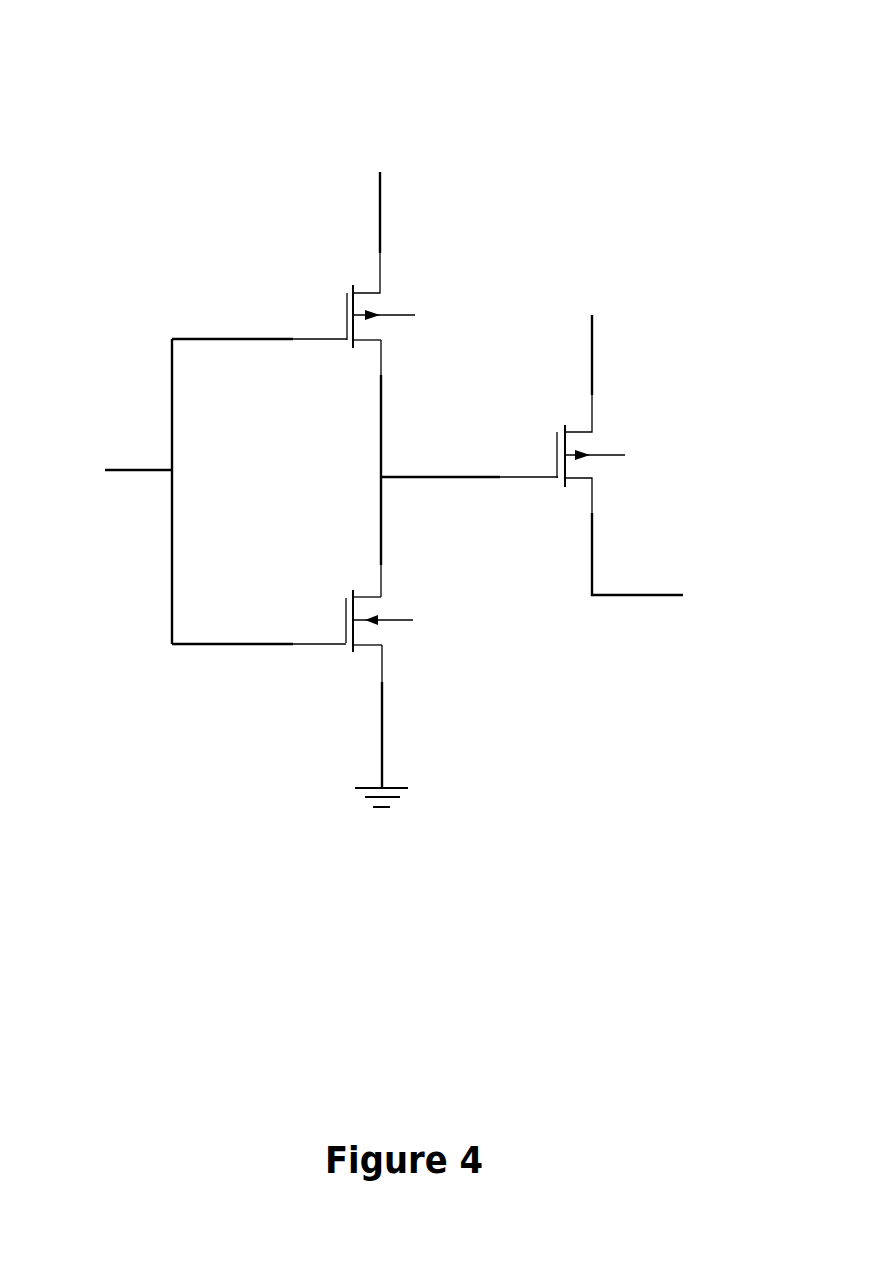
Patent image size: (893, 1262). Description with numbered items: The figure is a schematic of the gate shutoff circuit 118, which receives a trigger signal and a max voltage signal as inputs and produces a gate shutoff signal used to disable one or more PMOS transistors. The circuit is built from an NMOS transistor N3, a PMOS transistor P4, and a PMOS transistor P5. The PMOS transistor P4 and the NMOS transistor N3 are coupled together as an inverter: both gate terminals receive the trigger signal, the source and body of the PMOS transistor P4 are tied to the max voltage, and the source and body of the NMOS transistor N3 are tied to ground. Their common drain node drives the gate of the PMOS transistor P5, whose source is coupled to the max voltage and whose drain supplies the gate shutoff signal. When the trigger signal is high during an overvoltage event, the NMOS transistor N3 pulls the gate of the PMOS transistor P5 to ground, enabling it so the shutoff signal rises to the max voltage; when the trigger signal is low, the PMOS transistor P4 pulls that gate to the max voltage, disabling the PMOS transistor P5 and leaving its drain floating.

The gate shutoff circuit 118 is at (488, 72).
The PMOS transistor P4 is at (293, 242).
The NMOS transistor N3 is at (292, 686).
The PMOS transistor P5 is at (646, 438).